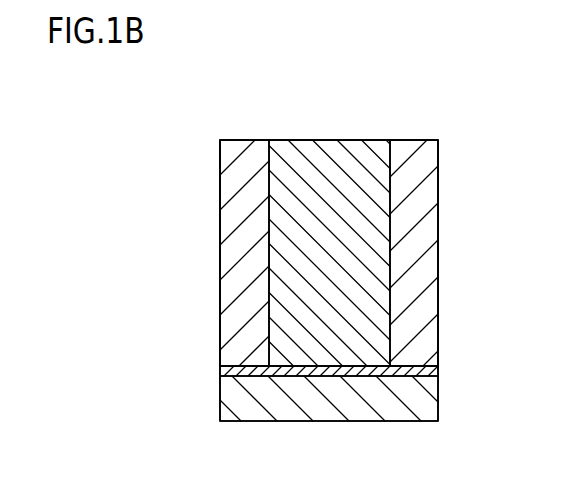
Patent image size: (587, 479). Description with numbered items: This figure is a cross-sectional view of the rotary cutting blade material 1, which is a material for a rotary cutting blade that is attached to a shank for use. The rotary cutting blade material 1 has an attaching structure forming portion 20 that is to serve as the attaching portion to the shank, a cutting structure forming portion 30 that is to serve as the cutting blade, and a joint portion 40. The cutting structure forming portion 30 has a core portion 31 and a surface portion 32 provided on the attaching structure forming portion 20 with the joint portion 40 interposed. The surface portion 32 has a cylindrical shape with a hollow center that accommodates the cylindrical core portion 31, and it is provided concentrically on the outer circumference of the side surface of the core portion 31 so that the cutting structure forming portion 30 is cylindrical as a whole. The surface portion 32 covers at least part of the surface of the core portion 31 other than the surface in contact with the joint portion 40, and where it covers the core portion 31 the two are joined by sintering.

The rotary cutting blade material 1 is at (477, 124).
The attaching structure forming portion 20 is at (415, 406).
The joint portion 40 is at (413, 372).
The cutting structure forming portion 30 is at (383, 253).
The core portion 31 is at (352, 188).
The surface portion 32 is at (507, 157).